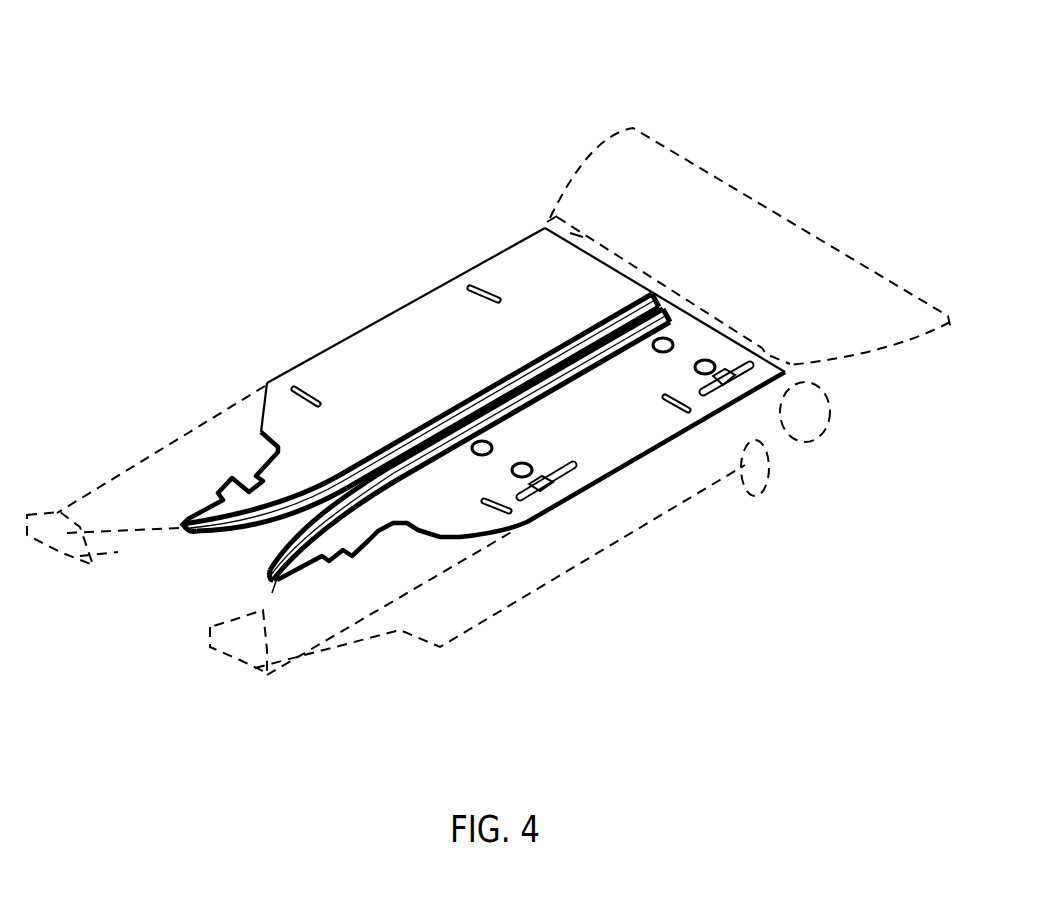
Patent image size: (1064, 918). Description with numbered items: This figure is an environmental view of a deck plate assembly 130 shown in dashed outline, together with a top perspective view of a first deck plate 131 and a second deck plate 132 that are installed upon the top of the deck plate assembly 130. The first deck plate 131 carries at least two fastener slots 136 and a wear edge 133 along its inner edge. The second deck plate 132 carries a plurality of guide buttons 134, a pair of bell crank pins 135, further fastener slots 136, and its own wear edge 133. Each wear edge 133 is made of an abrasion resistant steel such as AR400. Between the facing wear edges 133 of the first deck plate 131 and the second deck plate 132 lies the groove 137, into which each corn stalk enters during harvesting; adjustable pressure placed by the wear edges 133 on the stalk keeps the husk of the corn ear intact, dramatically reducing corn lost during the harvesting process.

The deck plate assembly 130 is at (858, 146).
The first deck plate 131 is at (440, 363).
The second deck plate 132 is at (625, 453).
The wear edge 133 is at (263, 513).
The guide buttons 134 is at (673, 340).
The bell crank pins 135 is at (745, 380).
The fastener slots 136 is at (467, 282).
The groove 137 is at (558, 362).